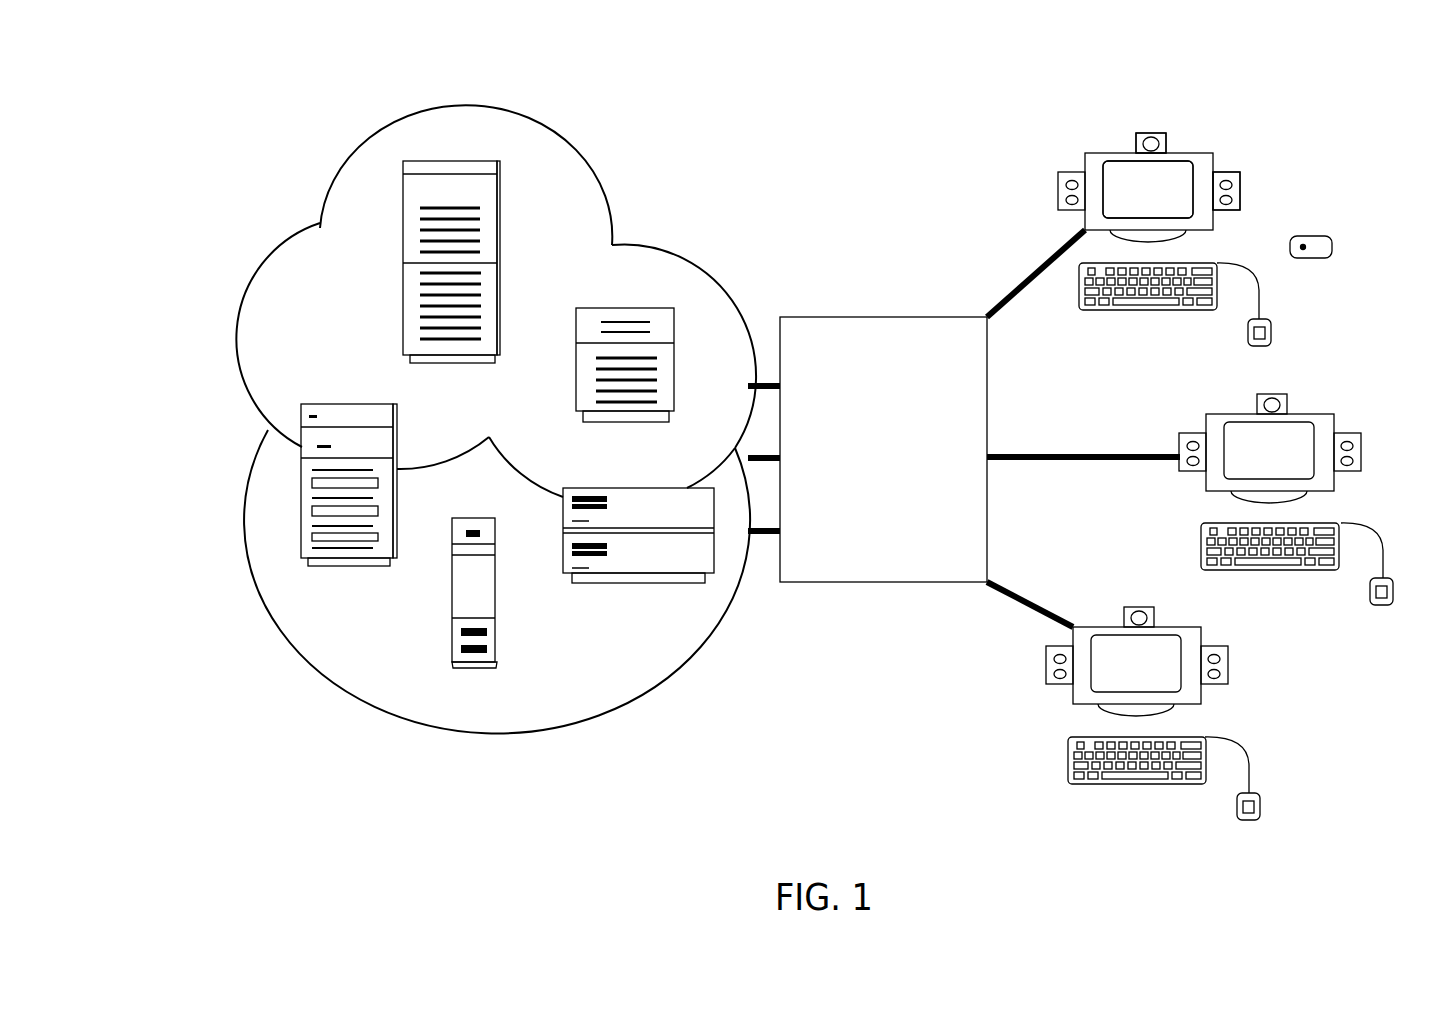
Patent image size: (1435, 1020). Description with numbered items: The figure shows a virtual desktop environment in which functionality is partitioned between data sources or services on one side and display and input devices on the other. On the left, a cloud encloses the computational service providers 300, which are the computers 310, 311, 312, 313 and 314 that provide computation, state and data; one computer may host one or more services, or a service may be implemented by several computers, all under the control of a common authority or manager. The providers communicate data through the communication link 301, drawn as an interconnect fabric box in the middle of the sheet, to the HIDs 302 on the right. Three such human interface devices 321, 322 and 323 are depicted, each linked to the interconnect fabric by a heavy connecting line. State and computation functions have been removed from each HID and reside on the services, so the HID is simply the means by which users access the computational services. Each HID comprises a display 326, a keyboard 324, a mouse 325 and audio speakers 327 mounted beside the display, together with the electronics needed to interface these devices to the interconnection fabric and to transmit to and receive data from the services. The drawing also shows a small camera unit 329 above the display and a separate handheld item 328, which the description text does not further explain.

The computational service providers 300 is at (703, 53).
The communication link 301 is at (870, 582).
The human interface devices 302 is at (1322, 45).
The computer 310 is at (500, 162).
The computer 311 is at (672, 307).
The computer 312 is at (714, 573).
The computer 313 is at (452, 668).
The computer 314 is at (305, 405).
The human interface device 321 is at (1213, 153).
The human interface device 322 is at (1313, 420).
The human interface device 323 is at (1202, 626).
The keyboard 324 is at (1116, 310).
The mouse 325 is at (1271, 334).
The display 326 is at (1105, 160).
The audio speakers 327 is at (1240, 190).
The peripheral device (smart card) 328 is at (1333, 246).
The camera 329 is at (1165, 135).